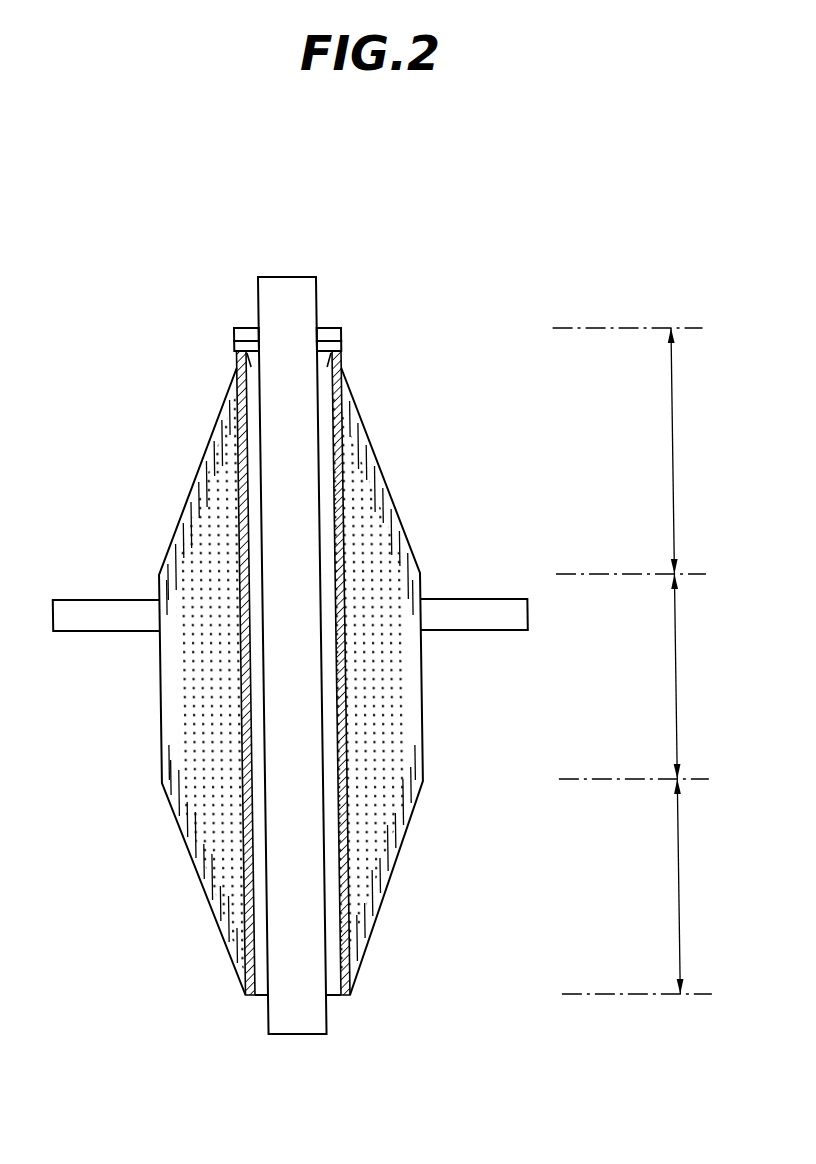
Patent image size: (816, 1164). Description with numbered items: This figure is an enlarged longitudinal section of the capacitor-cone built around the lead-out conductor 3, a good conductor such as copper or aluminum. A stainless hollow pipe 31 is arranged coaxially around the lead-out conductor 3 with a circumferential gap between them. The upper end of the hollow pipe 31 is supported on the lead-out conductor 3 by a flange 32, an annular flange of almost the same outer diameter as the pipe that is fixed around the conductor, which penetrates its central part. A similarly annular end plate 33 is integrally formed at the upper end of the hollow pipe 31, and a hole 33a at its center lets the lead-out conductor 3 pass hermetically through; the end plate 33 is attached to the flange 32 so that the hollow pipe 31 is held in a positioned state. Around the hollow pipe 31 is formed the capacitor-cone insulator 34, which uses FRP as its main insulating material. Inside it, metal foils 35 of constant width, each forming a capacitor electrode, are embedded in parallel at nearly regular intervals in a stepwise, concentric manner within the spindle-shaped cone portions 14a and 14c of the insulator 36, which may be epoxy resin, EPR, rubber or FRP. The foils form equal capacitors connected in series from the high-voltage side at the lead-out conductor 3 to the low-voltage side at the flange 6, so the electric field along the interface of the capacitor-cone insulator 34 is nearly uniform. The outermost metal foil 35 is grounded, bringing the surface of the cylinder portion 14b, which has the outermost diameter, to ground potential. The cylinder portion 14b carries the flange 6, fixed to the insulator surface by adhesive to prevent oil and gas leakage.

The lead-out conductor 3 is at (268, 307).
The flange 6 is at (456, 630).
The hollow pipe 31 is at (232, 568).
The flange 32 is at (323, 327).
The end plate 33 is at (337, 345).
The hole 33a is at (237, 370).
The capacitor-cone insulator 34 is at (147, 708).
The metal foils 35 is at (373, 497).
The insulator 36 is at (364, 575).
The cone portion 14a is at (667, 878).
The cylinder portion 14b is at (668, 685).
The cone portion 14c is at (667, 460).